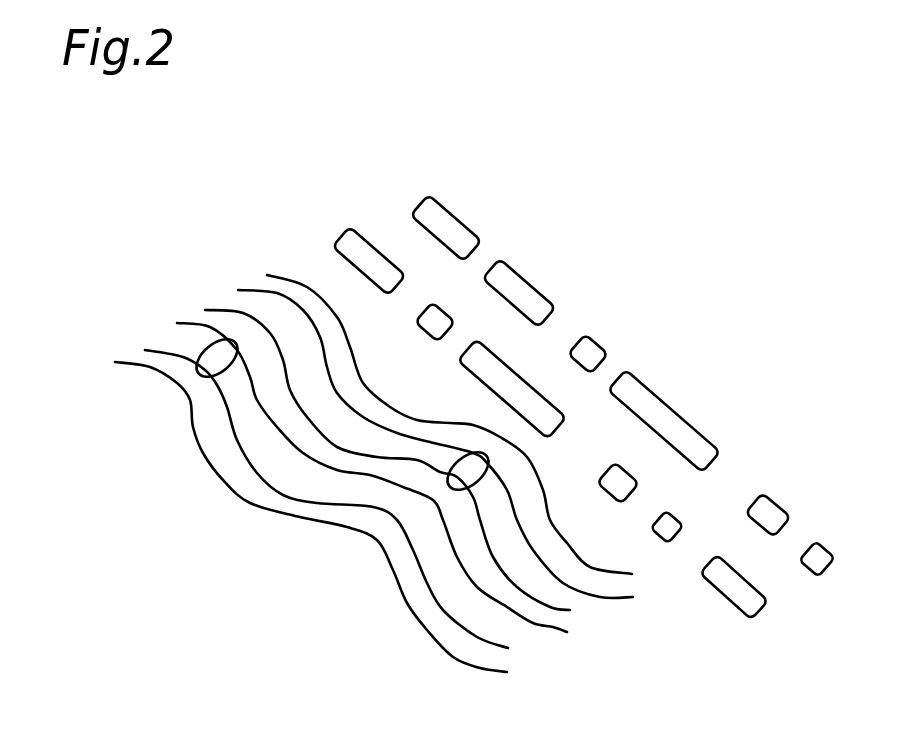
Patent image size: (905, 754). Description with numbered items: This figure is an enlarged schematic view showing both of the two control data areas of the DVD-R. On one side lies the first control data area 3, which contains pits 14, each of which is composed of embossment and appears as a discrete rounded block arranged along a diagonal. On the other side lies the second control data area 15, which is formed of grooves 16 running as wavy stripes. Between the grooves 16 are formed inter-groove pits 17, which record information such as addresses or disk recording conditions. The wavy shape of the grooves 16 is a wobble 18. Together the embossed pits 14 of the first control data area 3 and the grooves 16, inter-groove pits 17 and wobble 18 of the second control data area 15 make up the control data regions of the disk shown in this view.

The first control data area 3 is at (345, 193).
The pits 14 is at (667, 412).
The second control data area 15 is at (178, 290).
The grooves 16 is at (613, 585).
The inter-groove pits 17 is at (463, 472).
The wobble 18 is at (165, 392).